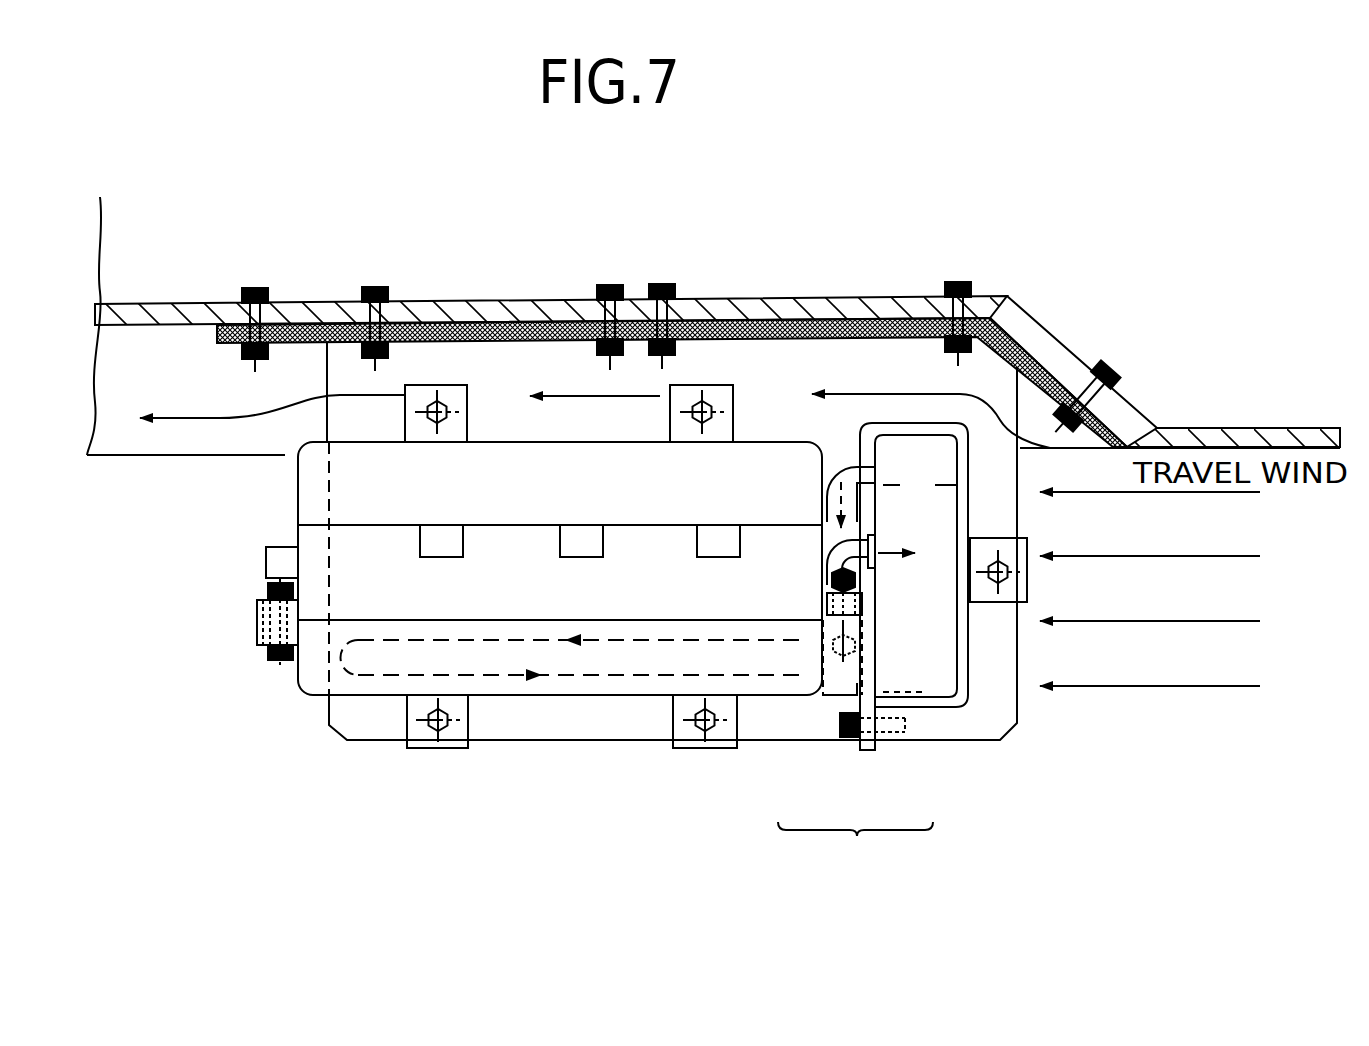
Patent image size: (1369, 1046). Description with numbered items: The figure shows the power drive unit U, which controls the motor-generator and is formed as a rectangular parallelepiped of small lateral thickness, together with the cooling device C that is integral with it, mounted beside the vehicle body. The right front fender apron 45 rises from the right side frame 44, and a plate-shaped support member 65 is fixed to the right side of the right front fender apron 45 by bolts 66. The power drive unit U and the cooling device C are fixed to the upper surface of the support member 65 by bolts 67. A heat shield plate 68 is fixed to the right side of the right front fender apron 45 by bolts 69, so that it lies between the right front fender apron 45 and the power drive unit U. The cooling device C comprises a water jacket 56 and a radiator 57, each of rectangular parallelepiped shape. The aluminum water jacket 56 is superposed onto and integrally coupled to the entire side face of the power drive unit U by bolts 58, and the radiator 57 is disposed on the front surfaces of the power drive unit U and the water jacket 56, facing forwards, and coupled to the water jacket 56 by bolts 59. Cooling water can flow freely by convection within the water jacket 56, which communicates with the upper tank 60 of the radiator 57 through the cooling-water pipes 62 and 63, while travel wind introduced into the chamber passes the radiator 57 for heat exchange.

The right side frame 44 is at (147, 235).
The right front fender apron 45 is at (468, 302).
The heat shield plate 68 is at (828, 318).
The bolts 69 is at (254, 287).
The bolts 66 is at (376, 288).
The support member 65 is at (565, 722).
The power drive unit U is at (298, 488).
The bolts 67 is at (437, 401).
The upper tank 60 is at (957, 488).
The cooling-water pipe 63 is at (827, 485).
The cooling-water pipe 62 is at (862, 575).
The bolts 58 is at (276, 662).
The water jacket 56 is at (771, 688).
The bolts 59 is at (835, 740).
The radiator 57 is at (938, 672).
The cooling device C is at (855, 846).